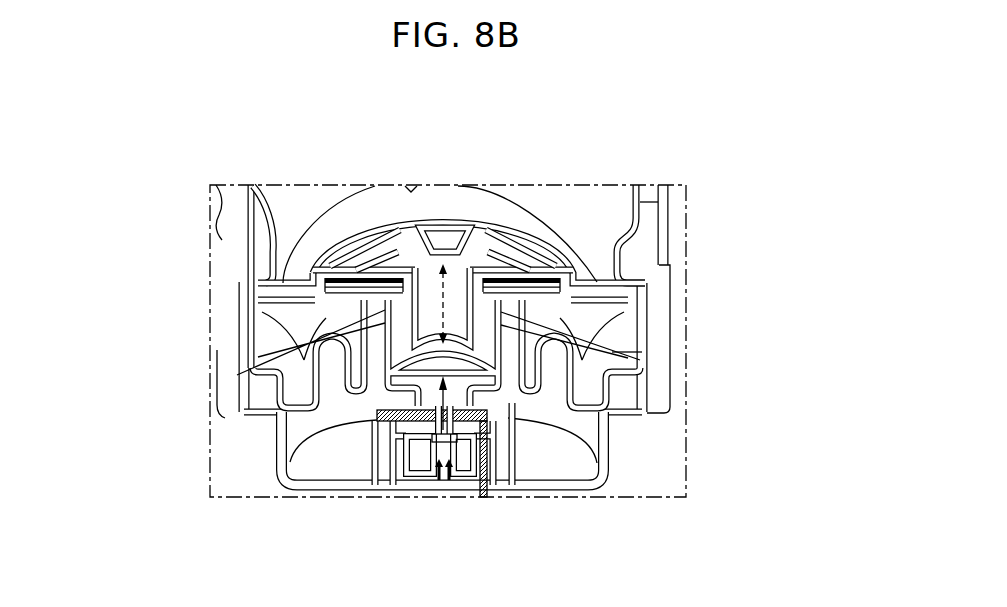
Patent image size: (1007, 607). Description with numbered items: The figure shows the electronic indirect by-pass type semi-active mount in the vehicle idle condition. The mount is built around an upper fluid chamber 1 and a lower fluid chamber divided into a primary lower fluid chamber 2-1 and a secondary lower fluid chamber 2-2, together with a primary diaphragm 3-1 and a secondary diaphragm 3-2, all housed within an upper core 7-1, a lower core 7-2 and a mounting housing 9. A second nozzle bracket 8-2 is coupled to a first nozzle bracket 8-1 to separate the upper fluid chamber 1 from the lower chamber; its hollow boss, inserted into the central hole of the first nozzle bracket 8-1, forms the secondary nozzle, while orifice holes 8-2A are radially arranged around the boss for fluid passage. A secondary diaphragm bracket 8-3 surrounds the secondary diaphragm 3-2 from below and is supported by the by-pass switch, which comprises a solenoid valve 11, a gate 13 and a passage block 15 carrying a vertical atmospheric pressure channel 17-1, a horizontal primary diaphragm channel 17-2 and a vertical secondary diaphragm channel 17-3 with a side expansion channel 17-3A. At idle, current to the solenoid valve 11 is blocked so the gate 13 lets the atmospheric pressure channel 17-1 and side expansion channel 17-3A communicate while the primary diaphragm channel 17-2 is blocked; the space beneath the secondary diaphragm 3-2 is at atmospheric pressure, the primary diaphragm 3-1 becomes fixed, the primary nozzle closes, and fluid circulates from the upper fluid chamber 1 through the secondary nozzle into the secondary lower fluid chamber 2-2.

The upper fluid chamber 1 is at (500, 207).
The primary lower fluid chamber 2-1 is at (605, 376).
The secondary lower fluid chamber 2-2 is at (405, 332).
The primary diaphragm 3-1 is at (315, 352).
The secondary diaphragm 3-2 is at (295, 405).
The upper core 7-1 is at (576, 205).
The lower core 7-2 is at (283, 462).
The first nozzle bracket 8-1 is at (568, 312).
The second nozzle bracket 8-2 is at (585, 278).
The orifice holes 8-2A is at (580, 245).
The secondary diaphragm bracket 8-3 is at (645, 357).
The mounting housing 9 is at (222, 242).
The solenoid valve 11 is at (431, 491).
The gate 13 is at (407, 483).
The passage block 15 is at (382, 478).
The atmospheric pressure channel 17-1 is at (495, 488).
The primary diaphragm channel 17-2 is at (398, 455).
The secondary diaphragm channel 17-3 is at (515, 410).
The side expansion channel 17-3A is at (450, 410).